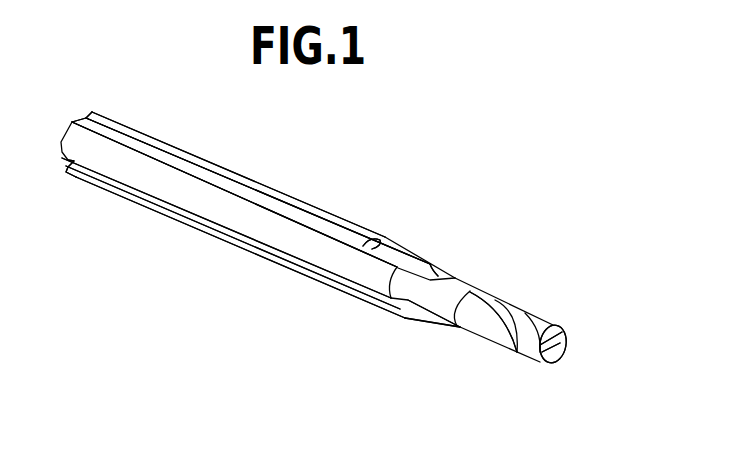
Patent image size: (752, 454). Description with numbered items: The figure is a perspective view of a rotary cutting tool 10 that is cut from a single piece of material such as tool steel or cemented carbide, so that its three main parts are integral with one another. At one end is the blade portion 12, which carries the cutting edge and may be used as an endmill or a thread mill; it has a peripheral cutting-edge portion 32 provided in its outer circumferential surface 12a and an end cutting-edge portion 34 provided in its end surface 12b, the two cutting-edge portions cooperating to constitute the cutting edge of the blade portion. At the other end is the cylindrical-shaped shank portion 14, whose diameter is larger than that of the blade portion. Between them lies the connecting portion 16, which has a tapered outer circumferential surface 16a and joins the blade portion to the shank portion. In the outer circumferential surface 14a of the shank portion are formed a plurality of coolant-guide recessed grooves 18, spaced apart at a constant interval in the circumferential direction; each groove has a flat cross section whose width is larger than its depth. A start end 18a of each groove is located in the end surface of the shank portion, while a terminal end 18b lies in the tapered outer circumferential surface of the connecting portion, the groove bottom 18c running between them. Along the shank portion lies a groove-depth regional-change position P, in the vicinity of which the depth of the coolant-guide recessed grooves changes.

The rotary cutting tool 10 is at (584, 49).
The blade portion 12 is at (492, 252).
The outer circumferential surface of the blade portion 12a is at (492, 336).
The end surface of the blade portion 12b is at (563, 328).
The shank portion 14 is at (107, 84).
The outer circumferential surface of the shank portion 14a is at (302, 242).
The connecting portion 16 is at (489, 253).
The tapered outer circumferential surface 16a is at (440, 312).
The coolant-guide recessed groove 18 is at (223, 177).
The start end of the coolant-guide recessed groove 18a is at (85, 122).
The terminal end of the coolant-guide recessed groove 18b is at (465, 276).
The groove bottom 18c is at (163, 157).
The groove-depth regional-change position P is at (383, 237).
The peripheral cutting-edge portion 32 is at (522, 354).
The end cutting-edge portion 34 is at (561, 348).